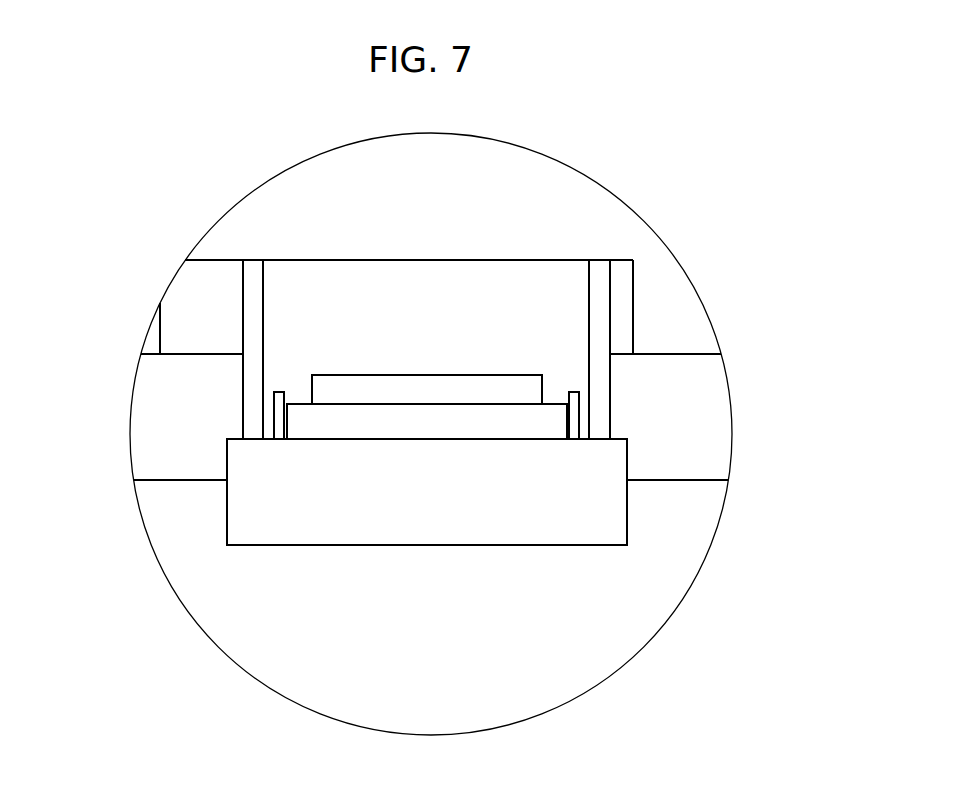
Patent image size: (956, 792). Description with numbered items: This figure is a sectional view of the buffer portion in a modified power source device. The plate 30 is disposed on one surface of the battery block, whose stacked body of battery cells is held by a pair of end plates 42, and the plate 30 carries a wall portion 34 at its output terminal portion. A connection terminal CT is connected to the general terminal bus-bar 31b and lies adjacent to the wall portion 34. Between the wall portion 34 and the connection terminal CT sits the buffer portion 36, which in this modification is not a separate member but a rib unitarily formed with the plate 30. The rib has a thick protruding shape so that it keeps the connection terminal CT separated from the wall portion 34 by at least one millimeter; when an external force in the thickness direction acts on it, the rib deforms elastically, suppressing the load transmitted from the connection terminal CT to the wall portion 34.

The connection terminal CT is at (413, 385).
The general terminal bus-bar 31b is at (338, 423).
The wall portion 34 is at (598, 298).
The buffer portion 36 is at (573, 412).
The plate 30 is at (595, 505).
The end plate 42 is at (603, 625).